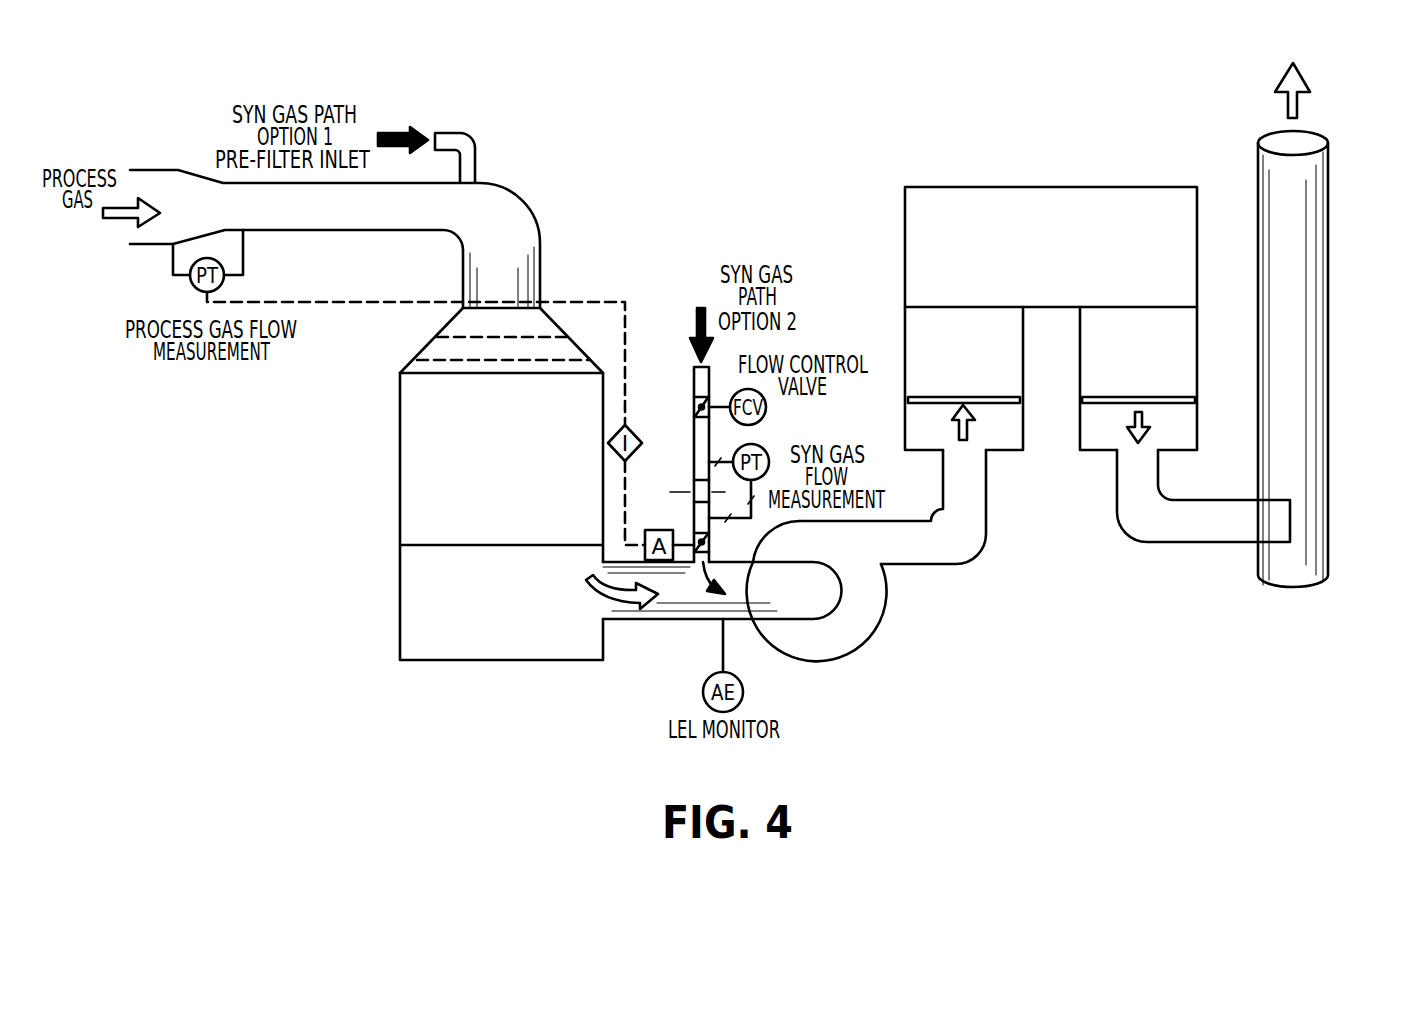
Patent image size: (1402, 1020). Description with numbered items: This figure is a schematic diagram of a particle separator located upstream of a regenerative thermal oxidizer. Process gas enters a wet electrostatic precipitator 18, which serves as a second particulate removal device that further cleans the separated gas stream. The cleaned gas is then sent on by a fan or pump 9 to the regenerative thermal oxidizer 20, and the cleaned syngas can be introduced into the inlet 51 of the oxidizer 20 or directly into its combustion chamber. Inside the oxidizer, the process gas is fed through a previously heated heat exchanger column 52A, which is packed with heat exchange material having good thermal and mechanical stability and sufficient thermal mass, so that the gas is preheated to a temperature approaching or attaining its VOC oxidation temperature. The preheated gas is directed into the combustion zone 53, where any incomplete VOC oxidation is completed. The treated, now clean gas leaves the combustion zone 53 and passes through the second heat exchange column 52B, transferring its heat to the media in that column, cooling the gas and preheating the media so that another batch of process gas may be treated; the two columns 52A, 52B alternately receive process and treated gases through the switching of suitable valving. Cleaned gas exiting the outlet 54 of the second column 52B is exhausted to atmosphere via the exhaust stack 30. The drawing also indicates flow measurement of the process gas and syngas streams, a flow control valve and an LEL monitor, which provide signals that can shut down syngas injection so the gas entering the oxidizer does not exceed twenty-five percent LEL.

The fan or pump 9 is at (848, 632).
The wet electrostatic precipitator 18 is at (413, 523).
The regenerative thermal oxidizer 20 is at (1051, 286).
The exhaust stack 30 is at (1318, 338).
The inlet 51 is at (975, 483).
The heat exchanger column 52A is at (980, 368).
The second heat exchange column 52B is at (1153, 368).
The combustion zone 53 is at (1123, 273).
The outlet 54 is at (1138, 490).